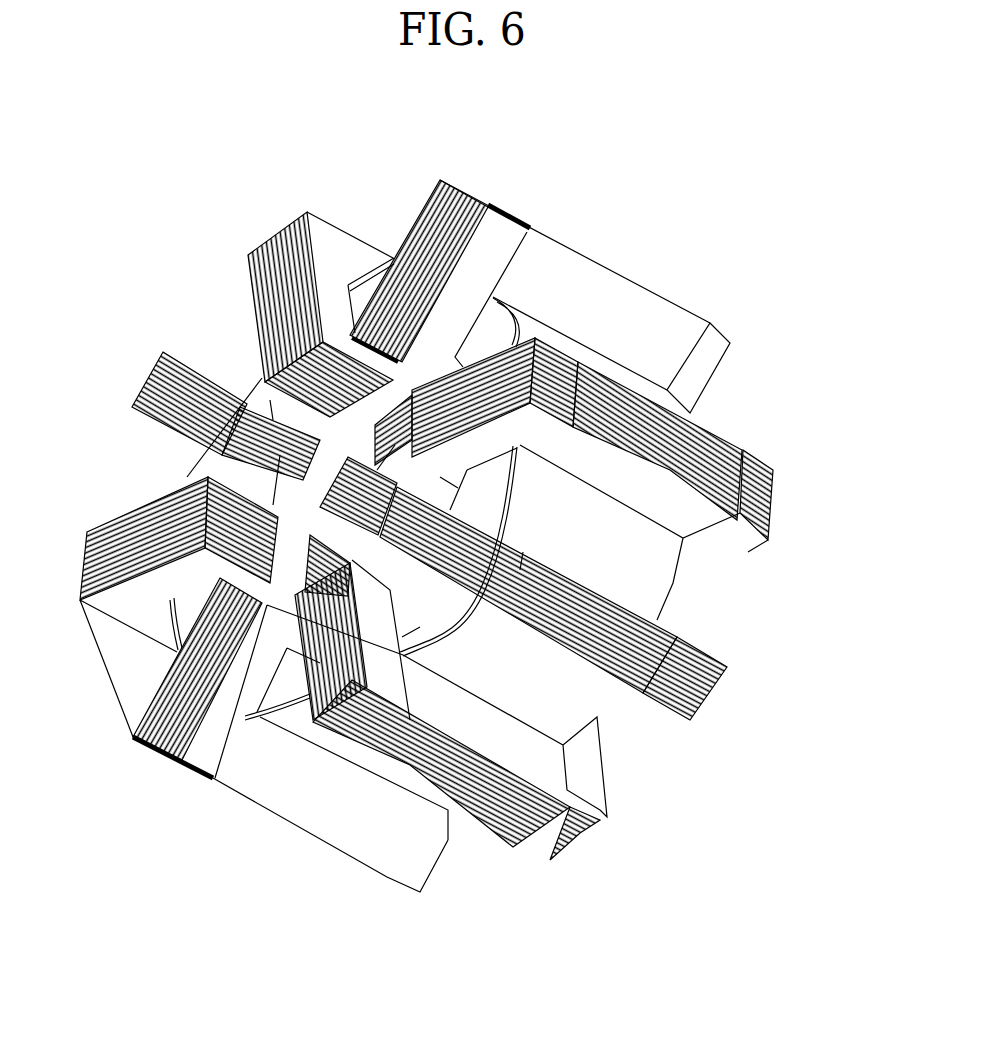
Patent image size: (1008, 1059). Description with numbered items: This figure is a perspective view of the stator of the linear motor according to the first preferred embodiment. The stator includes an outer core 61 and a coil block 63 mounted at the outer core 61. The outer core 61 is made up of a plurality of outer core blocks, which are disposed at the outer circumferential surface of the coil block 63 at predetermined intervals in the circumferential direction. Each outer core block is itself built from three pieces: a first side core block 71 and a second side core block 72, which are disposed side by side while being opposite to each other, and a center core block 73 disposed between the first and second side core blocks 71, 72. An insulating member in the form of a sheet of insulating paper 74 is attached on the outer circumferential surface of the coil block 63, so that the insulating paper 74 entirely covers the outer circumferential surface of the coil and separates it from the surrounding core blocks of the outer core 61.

The outer core 61 is at (636, 423).
The first side core block 71 is at (600, 343).
The center core block 73 is at (607, 410).
The second side core block 72 is at (817, 468).
The insulating paper 74 is at (627, 542).
The coil block 63 is at (185, 610).